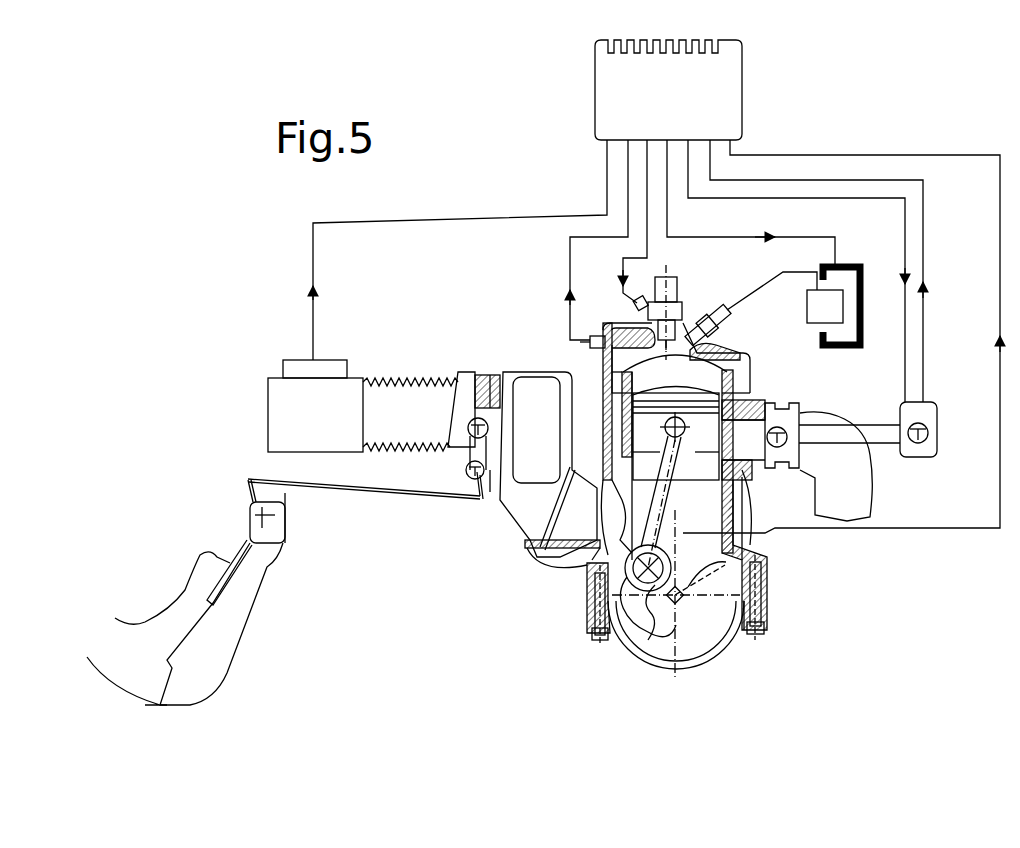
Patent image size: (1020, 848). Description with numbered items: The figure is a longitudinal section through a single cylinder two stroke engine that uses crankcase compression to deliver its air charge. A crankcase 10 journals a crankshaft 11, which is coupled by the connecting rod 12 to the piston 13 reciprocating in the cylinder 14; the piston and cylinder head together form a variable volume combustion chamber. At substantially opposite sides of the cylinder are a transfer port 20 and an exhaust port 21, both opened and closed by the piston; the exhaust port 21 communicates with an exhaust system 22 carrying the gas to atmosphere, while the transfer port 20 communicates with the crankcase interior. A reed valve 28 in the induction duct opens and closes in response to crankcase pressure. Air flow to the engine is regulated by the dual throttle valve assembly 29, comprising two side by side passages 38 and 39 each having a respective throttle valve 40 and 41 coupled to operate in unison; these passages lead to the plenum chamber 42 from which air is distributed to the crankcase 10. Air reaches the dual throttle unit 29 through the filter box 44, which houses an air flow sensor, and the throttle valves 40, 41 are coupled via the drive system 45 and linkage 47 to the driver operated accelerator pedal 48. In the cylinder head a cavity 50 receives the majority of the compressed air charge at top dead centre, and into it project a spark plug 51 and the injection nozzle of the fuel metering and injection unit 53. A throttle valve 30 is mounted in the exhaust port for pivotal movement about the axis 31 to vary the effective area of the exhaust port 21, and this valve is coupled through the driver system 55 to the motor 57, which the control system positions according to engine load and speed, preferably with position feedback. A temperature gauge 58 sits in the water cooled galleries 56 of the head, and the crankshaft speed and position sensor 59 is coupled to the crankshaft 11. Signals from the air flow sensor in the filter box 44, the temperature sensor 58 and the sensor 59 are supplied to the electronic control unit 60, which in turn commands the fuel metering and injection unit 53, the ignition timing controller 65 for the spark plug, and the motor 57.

The electronic control unit 60 is at (625, 103).
The filter box 44 is at (290, 408).
The dual throttle valve assembly 29 is at (440, 362).
The passage 38 is at (480, 380).
The throttle valve 41 is at (496, 375).
The throttle valve 40 is at (470, 440).
The drive system 45 is at (458, 468).
The linkage 47 is at (383, 500).
The passage 39 is at (490, 492).
The accelerator pedal 48 is at (240, 548).
The plenum chamber 42 is at (548, 464).
The reed valve 28 is at (573, 555).
The transfer port 20 is at (618, 445).
The water cooled galleries 56 is at (620, 345).
The temperature gauge 58 is at (590, 342).
The piston 13 is at (643, 417).
The cylinder 14 is at (670, 513).
The connecting rod 12 is at (745, 555).
The crankshaft speed and position sensor 59 is at (627, 657).
The crankcase 10 is at (587, 608).
The crankshaft 11 is at (710, 630).
The exhaust port 21 is at (620, 483).
The fuel metering and injection unit 53 is at (653, 303).
The cavity 50 is at (712, 352).
The spark plug 51 is at (717, 317).
The ignition timing controller 65 is at (823, 318).
The throttle valve 30 is at (755, 396).
The axis 31 is at (782, 433).
The exhaust system 22 is at (868, 490).
The driver system 55 is at (861, 419).
The motor 57 is at (923, 410).